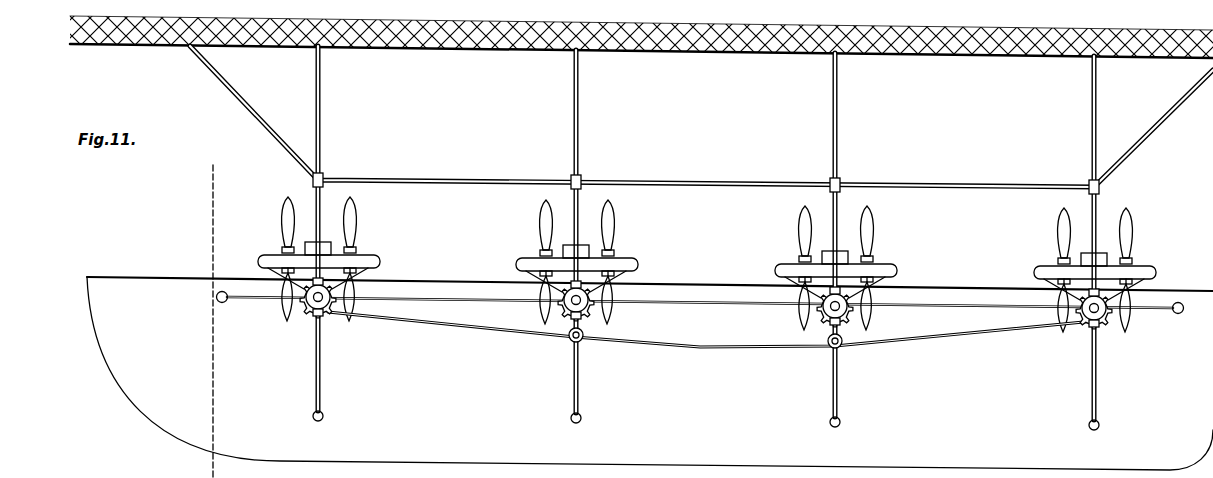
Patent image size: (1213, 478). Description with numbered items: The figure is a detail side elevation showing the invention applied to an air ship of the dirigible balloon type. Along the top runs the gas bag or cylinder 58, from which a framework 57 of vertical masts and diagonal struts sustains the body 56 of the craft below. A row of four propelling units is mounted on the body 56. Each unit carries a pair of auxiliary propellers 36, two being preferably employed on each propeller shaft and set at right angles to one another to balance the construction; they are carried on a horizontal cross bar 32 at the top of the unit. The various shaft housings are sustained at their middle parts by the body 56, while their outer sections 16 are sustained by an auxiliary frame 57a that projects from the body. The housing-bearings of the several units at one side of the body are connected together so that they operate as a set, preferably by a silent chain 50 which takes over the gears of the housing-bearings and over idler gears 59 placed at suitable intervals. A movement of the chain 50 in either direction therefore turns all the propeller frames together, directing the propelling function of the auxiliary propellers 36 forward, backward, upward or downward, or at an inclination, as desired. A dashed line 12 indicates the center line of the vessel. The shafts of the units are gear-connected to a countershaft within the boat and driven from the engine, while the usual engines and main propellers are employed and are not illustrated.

The center line of vessel 12 is at (209, 317).
The outer shaft housing section 16 is at (325, 322).
The propeller supporting bar 32 is at (373, 262).
The propellers 36 is at (286, 222).
The silent chain 50 is at (693, 281).
The body 56 is at (650, 373).
The framework 57 is at (582, 170).
The auxiliary frame 57a is at (1170, 313).
The gas bag or cylinder 58 is at (456, 47).
The idler gears 59 is at (584, 344).